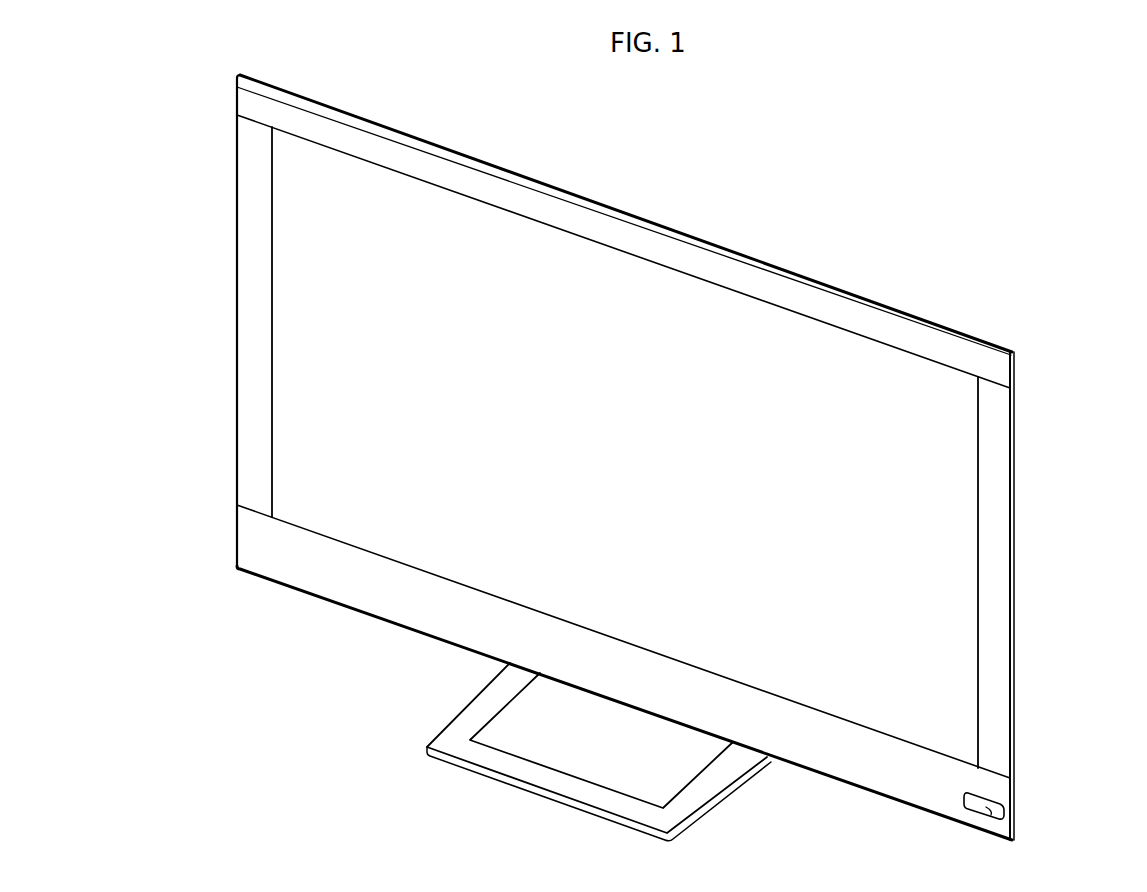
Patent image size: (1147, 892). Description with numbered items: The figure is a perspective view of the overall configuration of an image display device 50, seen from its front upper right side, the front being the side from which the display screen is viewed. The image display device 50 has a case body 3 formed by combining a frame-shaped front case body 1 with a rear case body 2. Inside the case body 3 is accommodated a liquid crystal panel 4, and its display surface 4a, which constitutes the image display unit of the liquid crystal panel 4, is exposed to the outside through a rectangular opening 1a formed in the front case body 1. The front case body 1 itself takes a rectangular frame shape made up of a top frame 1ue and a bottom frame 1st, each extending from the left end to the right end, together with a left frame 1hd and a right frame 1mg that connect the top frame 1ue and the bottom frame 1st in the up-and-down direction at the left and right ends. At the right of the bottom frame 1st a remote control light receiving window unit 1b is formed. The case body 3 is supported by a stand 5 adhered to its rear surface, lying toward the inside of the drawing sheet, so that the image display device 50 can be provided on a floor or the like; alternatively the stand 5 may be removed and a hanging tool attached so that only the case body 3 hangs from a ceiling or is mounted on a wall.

The image display device 50 is at (951, 184).
The front case body 1 is at (958, 352).
The opening 1a is at (645, 262).
The top frame 1ue is at (480, 186).
The bottom frame 1st is at (400, 597).
The left frame 1hd is at (250, 317).
The right frame 1mg is at (992, 565).
The remote control light receiving window unit 1b is at (1015, 817).
The rear case body 2 is at (1020, 371).
The case body 3 is at (1096, 285).
The liquid crystal panel 4 is at (832, 386).
The display surface 4a is at (767, 362).
The stand 5 is at (700, 795).